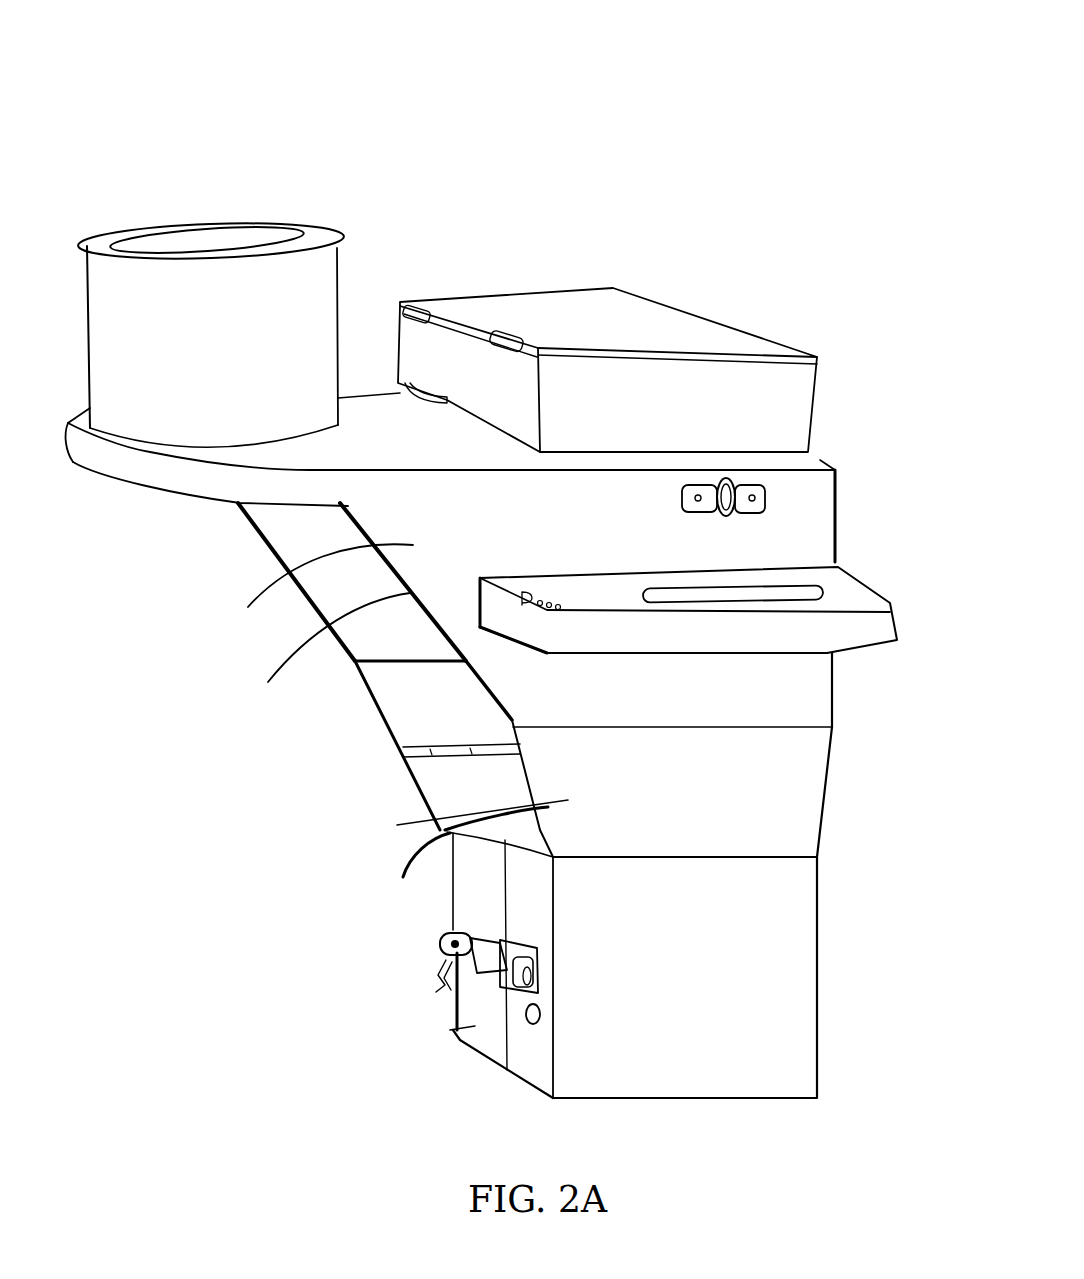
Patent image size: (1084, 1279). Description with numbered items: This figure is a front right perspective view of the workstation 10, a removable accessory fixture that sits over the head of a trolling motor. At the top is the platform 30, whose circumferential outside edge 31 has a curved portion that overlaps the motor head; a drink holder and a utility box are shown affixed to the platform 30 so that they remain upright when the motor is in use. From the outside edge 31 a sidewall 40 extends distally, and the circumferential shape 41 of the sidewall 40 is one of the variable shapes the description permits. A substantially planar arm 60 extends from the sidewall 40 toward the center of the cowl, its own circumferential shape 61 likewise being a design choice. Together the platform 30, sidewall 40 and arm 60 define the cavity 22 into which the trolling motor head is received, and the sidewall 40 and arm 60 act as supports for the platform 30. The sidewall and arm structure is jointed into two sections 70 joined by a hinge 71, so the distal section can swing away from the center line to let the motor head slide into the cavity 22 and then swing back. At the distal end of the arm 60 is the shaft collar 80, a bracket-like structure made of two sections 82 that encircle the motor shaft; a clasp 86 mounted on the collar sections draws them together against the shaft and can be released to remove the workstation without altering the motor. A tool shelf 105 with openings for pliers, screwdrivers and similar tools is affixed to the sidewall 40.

The workstation 10 is at (534, 68).
The cavity 22 is at (390, 688).
The platform 30 is at (138, 465).
The outside edge 31 is at (310, 468).
The sidewall 40 is at (297, 555).
The circumferential shape 41 is at (835, 518).
The arm 60 is at (430, 778).
The circumferential shape 61 is at (415, 868).
The jointed section 70 is at (410, 725).
The hinge 71 is at (435, 748).
The shaft collar 80 is at (410, 1022).
The section 82 is at (530, 1060).
The clasp 86 is at (485, 963).
The tool shelf 105 is at (847, 592).